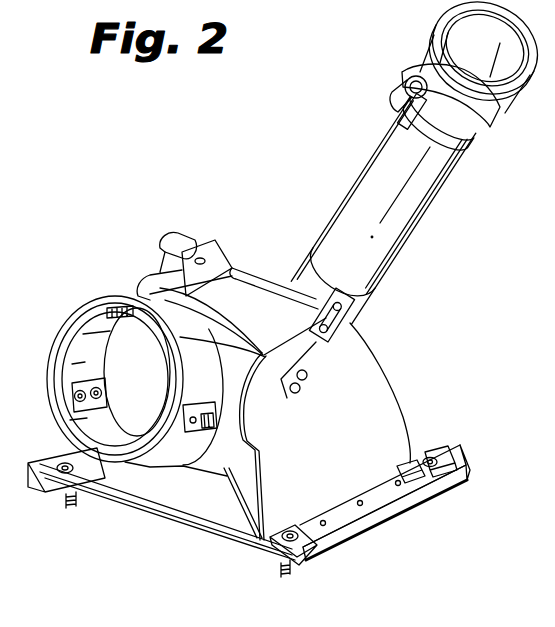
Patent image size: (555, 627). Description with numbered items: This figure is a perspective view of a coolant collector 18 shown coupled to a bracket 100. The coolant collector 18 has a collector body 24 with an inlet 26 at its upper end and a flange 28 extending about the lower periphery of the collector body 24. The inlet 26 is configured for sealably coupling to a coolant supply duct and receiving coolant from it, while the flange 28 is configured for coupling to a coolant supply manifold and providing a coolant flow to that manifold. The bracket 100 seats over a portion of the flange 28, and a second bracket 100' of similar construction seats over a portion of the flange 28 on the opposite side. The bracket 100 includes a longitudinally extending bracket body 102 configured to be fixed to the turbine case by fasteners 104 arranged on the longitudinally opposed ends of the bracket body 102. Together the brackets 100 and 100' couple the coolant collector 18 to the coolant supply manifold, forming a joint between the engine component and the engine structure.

The coolant collector 18 is at (118, 235).
The collector body 24 is at (370, 382).
The inlet 26 is at (148, 408).
The flange 28 is at (180, 522).
The bracket 100 is at (386, 526).
The second bracket 100' is at (66, 520).
The bracket body 102 is at (382, 492).
The fasteners 104 is at (292, 527).